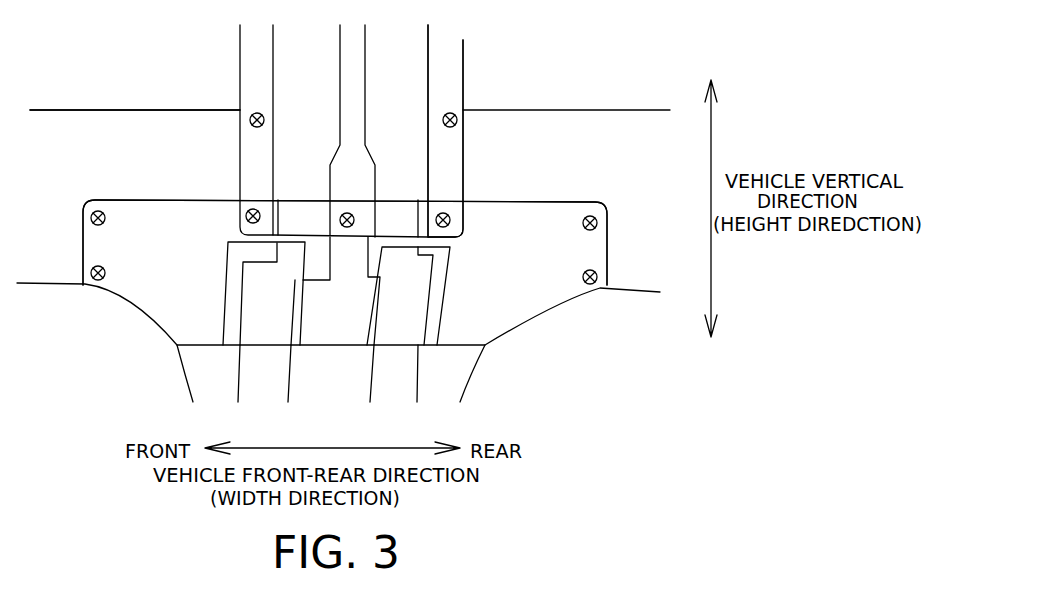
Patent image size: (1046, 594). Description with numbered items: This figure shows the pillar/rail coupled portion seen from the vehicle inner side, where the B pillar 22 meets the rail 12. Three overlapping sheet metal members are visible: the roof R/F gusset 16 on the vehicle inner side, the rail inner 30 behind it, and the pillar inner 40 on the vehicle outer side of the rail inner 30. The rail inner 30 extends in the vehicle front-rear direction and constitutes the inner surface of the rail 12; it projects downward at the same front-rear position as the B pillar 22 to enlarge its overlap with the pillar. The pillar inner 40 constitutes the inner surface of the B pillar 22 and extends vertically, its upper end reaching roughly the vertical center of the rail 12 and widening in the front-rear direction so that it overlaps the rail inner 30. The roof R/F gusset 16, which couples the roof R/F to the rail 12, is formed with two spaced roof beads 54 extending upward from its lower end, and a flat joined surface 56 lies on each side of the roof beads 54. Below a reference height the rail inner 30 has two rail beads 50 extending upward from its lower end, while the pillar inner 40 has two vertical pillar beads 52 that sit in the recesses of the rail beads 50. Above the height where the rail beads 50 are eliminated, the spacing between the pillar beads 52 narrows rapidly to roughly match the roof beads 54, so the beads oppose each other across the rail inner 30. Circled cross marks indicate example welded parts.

The rail inner 30 is at (135, 110).
The rail 12 is at (135, 76).
The roof R/F gusset 16 is at (455, 62).
The pillar inner 40 is at (525, 203).
The B pillar 22 is at (356, 170).
The joined surface 56 is at (269, 81).
The roof bead 54 is at (317, 104).
The rail bead 50 is at (272, 321).
The pillar bead 52 is at (272, 386).